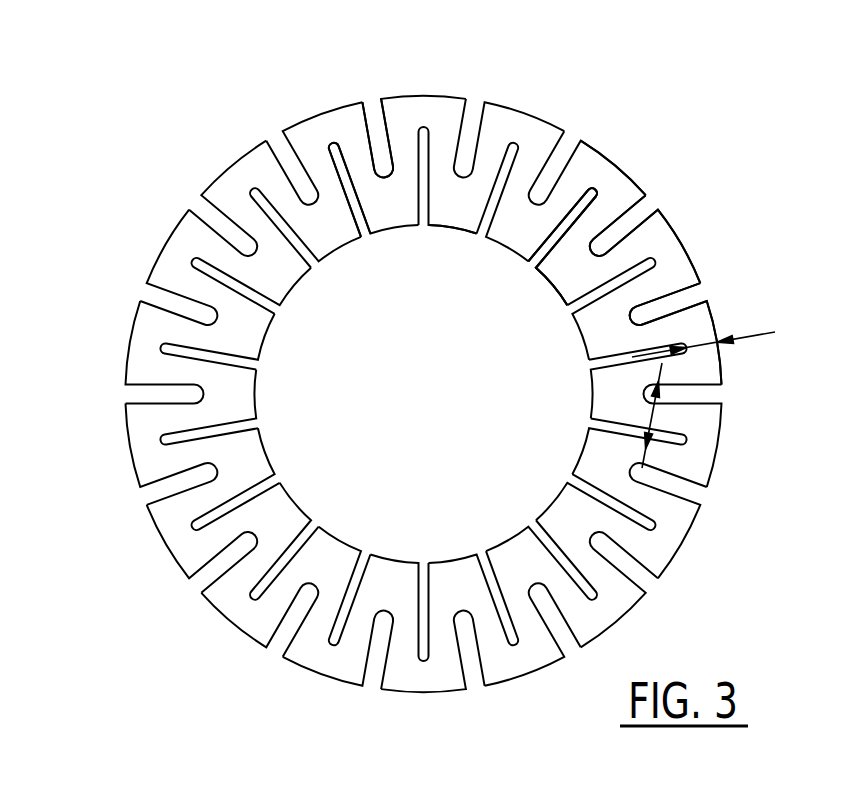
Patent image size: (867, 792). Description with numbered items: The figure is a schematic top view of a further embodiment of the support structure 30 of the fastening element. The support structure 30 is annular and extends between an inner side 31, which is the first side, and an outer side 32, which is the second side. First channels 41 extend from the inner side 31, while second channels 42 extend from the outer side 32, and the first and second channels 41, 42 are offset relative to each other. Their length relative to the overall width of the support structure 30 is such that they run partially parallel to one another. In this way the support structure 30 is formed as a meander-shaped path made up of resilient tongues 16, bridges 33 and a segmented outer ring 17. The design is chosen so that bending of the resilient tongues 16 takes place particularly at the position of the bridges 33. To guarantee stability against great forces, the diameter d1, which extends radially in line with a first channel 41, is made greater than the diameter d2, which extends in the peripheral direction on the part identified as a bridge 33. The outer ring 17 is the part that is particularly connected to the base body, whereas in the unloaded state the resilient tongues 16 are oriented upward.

The support structure 30 is at (116, 127).
The second channels 42 is at (382, 132).
The first channels 41 is at (368, 235).
The outer side 32 is at (512, 105).
The inner side 31 is at (450, 232).
The segmented outer ring 17 is at (607, 172).
The resilient tongues 16 is at (562, 272).
The bridges 33 is at (635, 246).
The diameter in line with first channel d1 is at (716, 327).
The diameter of bridge d2 is at (663, 413).